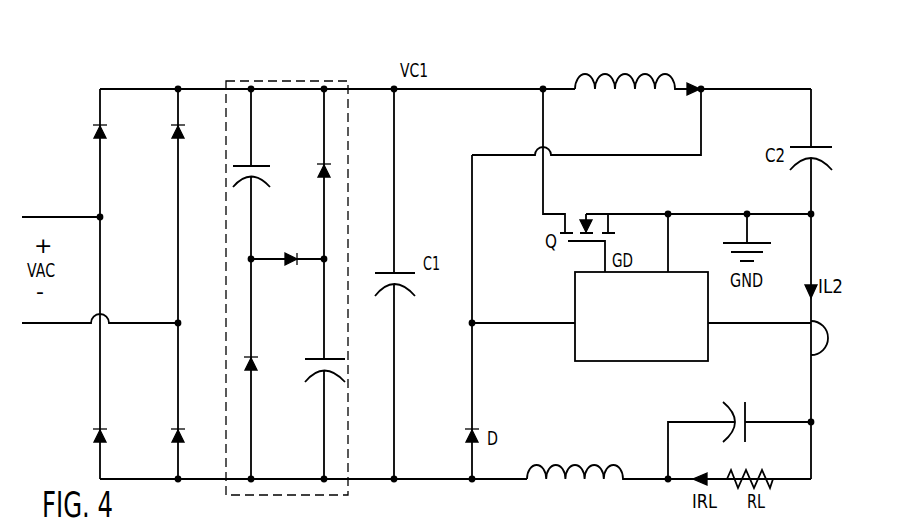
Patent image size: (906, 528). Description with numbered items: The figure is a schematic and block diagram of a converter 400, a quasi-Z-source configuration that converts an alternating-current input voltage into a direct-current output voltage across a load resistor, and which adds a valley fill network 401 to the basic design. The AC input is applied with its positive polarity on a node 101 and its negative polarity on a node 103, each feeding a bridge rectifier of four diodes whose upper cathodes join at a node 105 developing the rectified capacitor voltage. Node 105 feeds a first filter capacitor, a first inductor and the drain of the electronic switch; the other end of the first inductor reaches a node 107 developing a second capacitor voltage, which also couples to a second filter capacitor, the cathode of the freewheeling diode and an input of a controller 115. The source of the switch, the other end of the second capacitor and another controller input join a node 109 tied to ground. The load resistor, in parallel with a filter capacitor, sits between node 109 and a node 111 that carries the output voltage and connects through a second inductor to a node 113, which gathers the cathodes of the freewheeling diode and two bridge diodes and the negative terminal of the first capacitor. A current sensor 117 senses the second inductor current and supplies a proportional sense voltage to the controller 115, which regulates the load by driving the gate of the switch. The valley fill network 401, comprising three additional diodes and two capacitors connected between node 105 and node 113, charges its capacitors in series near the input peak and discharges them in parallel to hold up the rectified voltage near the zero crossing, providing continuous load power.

The node 101 is at (57, 217).
The node 103 is at (60, 323).
The node 105 is at (178, 89).
The node 107 is at (701, 89).
The node 109 is at (811, 214).
The node 111 is at (668, 479).
The node 113 is at (394, 479).
The controller 115 is at (655, 337).
The current sensor 117 is at (797, 337).
The converter 400 is at (53, 457).
The valley fill network 401 is at (290, 81).